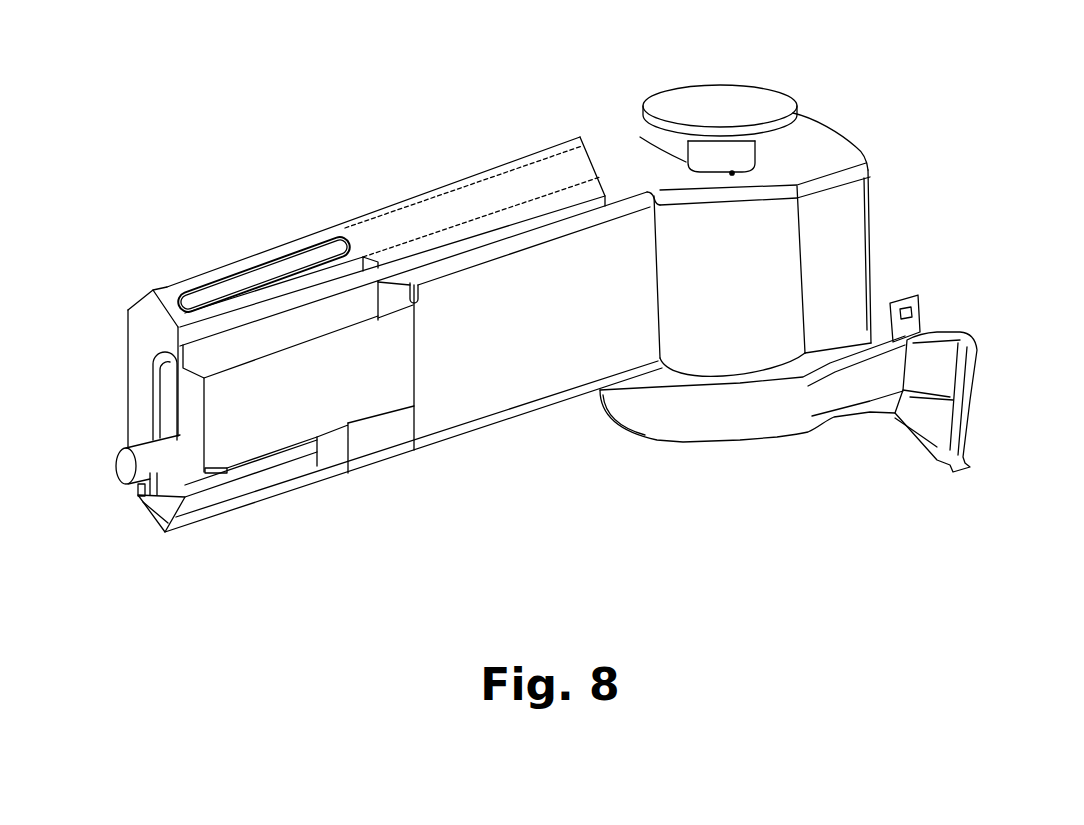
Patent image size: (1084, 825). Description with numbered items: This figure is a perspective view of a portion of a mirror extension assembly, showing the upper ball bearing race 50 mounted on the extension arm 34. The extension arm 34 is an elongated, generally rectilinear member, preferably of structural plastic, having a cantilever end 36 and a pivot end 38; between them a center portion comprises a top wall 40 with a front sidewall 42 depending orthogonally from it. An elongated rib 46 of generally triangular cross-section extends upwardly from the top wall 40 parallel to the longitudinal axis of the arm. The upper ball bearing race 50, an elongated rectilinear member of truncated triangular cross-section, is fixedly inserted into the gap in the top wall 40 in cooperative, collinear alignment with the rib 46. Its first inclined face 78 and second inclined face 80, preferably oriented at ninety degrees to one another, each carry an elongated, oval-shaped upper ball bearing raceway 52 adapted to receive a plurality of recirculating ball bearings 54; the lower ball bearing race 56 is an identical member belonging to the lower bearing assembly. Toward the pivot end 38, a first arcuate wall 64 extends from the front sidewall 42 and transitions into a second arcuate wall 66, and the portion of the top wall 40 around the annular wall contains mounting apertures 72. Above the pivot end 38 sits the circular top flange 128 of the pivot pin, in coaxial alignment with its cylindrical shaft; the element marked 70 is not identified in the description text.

The extension arm 34 is at (487, 158).
The cantilever end 36 is at (141, 347).
The pivot end 38 is at (848, 145).
The top wall 40 is at (552, 217).
The front sidewall 42 is at (543, 357).
The elongated rib 46 is at (412, 217).
The upper ball bearing race 50 is at (175, 290).
The upper ball bearing raceway 52 is at (243, 270).
The recirculating ball bearings 54 is at (292, 252).
The lower ball bearing race 56 is at (215, 497).
The first arcuate wall 64 is at (692, 335).
The second arcuate wall 66 is at (873, 228).
The stem 70 is at (797, 140).
The mounting apertures 72 is at (683, 158).
The first inclined face 78 is at (338, 235).
The second inclined face 80 is at (272, 495).
The circular top flange 128 is at (701, 108).